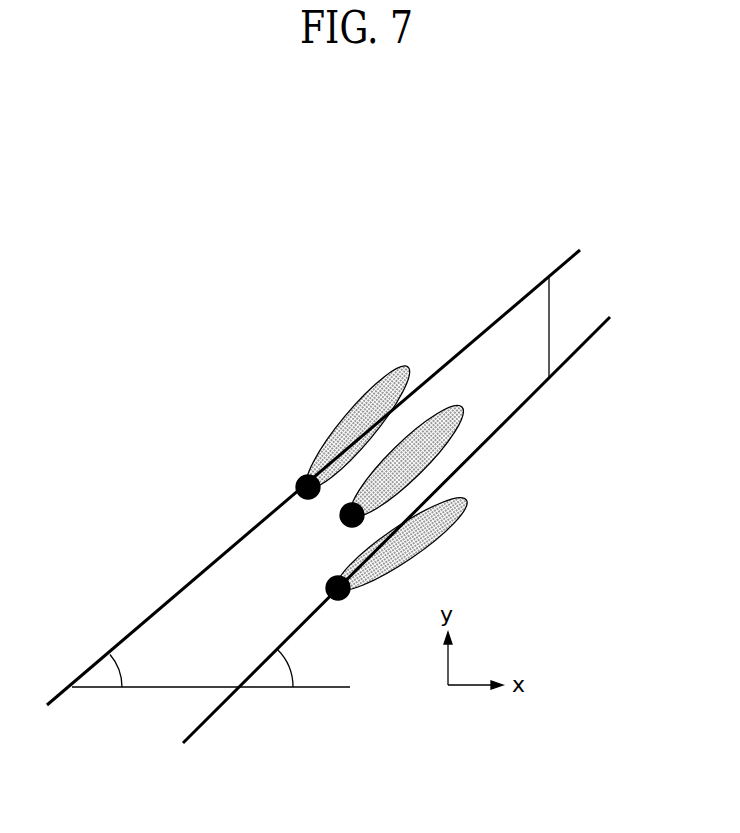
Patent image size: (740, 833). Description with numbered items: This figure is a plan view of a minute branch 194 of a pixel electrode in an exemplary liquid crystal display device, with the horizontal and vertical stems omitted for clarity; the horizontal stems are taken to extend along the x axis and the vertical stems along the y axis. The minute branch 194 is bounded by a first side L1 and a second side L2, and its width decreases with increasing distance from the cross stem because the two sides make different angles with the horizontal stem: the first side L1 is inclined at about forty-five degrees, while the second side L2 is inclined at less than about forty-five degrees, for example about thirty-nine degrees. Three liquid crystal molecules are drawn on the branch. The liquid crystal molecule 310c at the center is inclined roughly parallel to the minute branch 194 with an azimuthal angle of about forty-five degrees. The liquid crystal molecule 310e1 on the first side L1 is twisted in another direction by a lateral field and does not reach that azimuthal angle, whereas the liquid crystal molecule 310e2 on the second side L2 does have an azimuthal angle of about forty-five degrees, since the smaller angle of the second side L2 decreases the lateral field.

The first side L1 is at (530, 400).
The second side L2 is at (508, 308).
The minute branch 194 is at (549, 338).
The liquid crystal molecule 310e2 is at (377, 398).
The liquid crystal molecule 310c is at (437, 433).
The liquid crystal molecule 310e1 is at (442, 522).